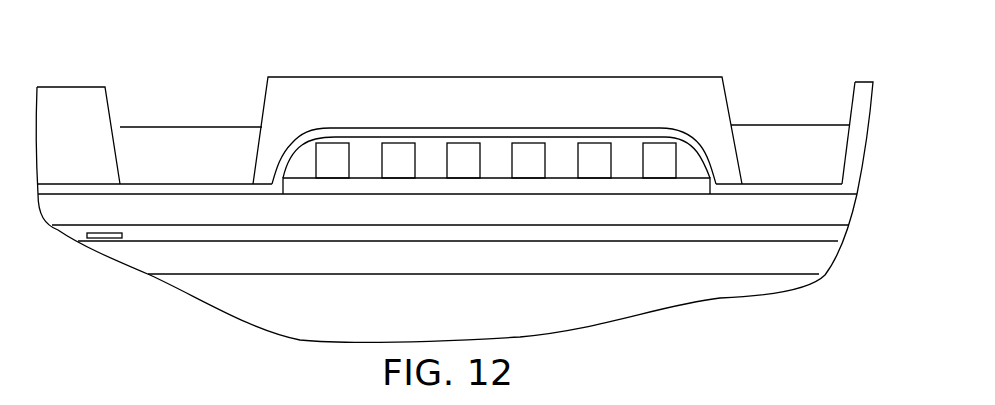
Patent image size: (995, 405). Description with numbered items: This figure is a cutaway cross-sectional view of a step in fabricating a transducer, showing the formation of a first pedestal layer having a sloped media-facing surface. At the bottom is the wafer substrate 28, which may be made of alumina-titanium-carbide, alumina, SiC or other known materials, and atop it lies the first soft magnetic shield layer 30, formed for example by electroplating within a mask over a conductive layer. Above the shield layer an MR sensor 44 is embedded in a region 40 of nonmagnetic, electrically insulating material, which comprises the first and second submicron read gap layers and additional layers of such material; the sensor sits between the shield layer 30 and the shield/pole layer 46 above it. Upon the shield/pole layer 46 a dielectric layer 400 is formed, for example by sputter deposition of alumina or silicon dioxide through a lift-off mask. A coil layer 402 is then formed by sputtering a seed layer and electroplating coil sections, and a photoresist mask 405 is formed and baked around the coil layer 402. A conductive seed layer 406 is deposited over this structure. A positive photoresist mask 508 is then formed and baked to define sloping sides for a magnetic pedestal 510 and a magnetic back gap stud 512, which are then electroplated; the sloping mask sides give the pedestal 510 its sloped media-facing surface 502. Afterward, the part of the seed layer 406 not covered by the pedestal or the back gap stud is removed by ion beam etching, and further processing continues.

The wafer substrate 28 is at (458, 318).
The first soft magnetic shield layer 30 is at (352, 270).
The region of nonmagnetic, electrically insulating layers 40 is at (625, 236).
The MR sensor 44 is at (105, 240).
The shield/pole layer 46 is at (588, 218).
The dielectric layer 400 is at (367, 178).
The coil layer 402 is at (682, 158).
The photoresist mask 405 is at (432, 143).
The conductive seed layer 406 is at (545, 127).
The sloped media-facing surface 502 is at (117, 161).
The positive photoresist mask 508 is at (70, 87).
The magnetic pedestal 510 is at (195, 173).
The magnetic back gap stud 512 is at (807, 170).